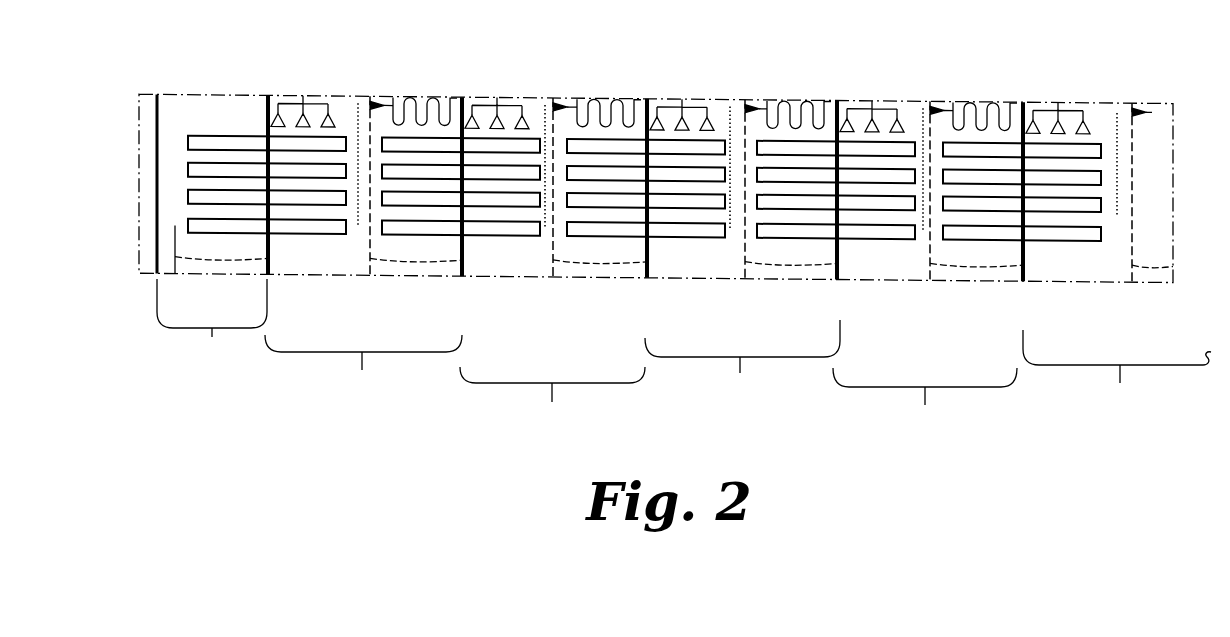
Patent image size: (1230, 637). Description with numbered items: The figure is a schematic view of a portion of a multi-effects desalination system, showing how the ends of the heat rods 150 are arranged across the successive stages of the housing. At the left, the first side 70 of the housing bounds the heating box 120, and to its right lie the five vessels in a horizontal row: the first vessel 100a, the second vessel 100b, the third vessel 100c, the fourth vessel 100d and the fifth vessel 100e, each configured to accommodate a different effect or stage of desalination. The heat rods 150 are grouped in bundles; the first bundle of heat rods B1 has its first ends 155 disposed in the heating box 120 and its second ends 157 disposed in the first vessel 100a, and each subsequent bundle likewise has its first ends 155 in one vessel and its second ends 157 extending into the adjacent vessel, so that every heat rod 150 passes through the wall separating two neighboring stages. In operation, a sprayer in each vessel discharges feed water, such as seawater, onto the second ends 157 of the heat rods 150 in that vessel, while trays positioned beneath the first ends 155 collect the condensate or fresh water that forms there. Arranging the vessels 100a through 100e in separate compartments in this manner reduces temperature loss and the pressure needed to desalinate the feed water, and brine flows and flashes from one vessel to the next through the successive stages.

The first side 70 is at (155, 218).
The heating box 120 is at (212, 302).
The first bundle of heat rods B1 is at (208, 128).
The heat rods 150 is at (238, 122).
The first end 155 is at (170, 127).
The second end 157 is at (353, 240).
The first vessel 100a is at (363, 247).
The second vessel 100b is at (553, 263).
The third vessel 100c is at (742, 251).
The fourth vessel 100d is at (928, 269).
The fifth vessel 100e is at (1117, 262).